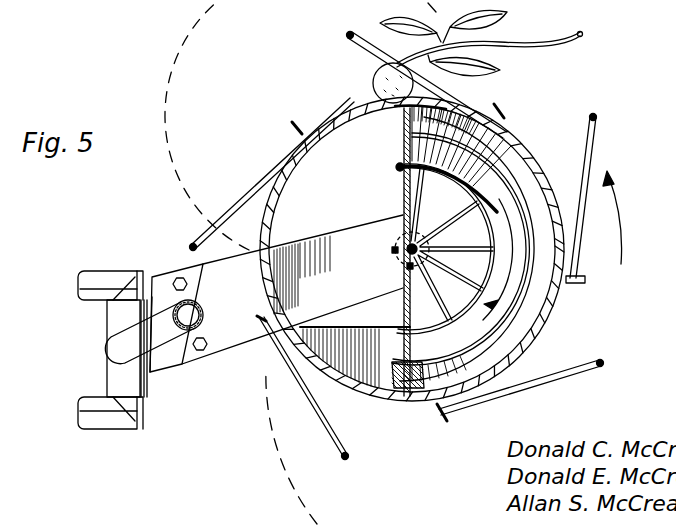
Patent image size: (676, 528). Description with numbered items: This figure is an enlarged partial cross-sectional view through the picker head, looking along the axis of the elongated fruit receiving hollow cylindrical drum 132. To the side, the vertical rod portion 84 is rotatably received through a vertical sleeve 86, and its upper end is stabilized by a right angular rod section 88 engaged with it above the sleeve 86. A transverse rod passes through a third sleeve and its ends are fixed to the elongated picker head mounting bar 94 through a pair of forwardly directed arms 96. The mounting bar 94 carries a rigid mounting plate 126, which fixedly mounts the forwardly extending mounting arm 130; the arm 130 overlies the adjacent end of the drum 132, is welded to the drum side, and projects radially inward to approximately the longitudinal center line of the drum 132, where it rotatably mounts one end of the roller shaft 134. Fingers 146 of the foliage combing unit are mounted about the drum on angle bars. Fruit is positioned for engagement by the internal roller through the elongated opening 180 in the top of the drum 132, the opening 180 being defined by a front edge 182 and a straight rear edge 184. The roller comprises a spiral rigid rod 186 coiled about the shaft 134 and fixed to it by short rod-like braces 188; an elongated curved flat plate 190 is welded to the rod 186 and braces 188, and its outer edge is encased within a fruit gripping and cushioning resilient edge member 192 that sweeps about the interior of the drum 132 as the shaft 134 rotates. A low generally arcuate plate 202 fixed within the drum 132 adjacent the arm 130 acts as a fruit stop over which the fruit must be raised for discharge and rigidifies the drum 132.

The vertical rod portion 84 is at (137, 281).
The vertical sleeve 86 is at (125, 377).
The right angular rod section 88 is at (93, 284).
The picker head mounting bar 94 is at (201, 305).
The forwardly directed arms 96 is at (167, 347).
The mounting plate 126 is at (217, 344).
The mounting arm 130 is at (289, 250).
The fruit receiving drum 132 is at (402, 404).
The roller shaft 134 is at (392, 257).
The fingers 146 is at (528, 386).
The elongated opening 180 is at (343, 109).
The front edge 182 is at (334, 108).
The rear edge 184 is at (523, 157).
The spiral rigid rod 186 is at (403, 345).
The rod-like braces 188 is at (435, 198).
The curved flat plate 190 is at (403, 305).
The resilient edge member 192 is at (500, 350).
The arcuate plate 202 is at (338, 392).